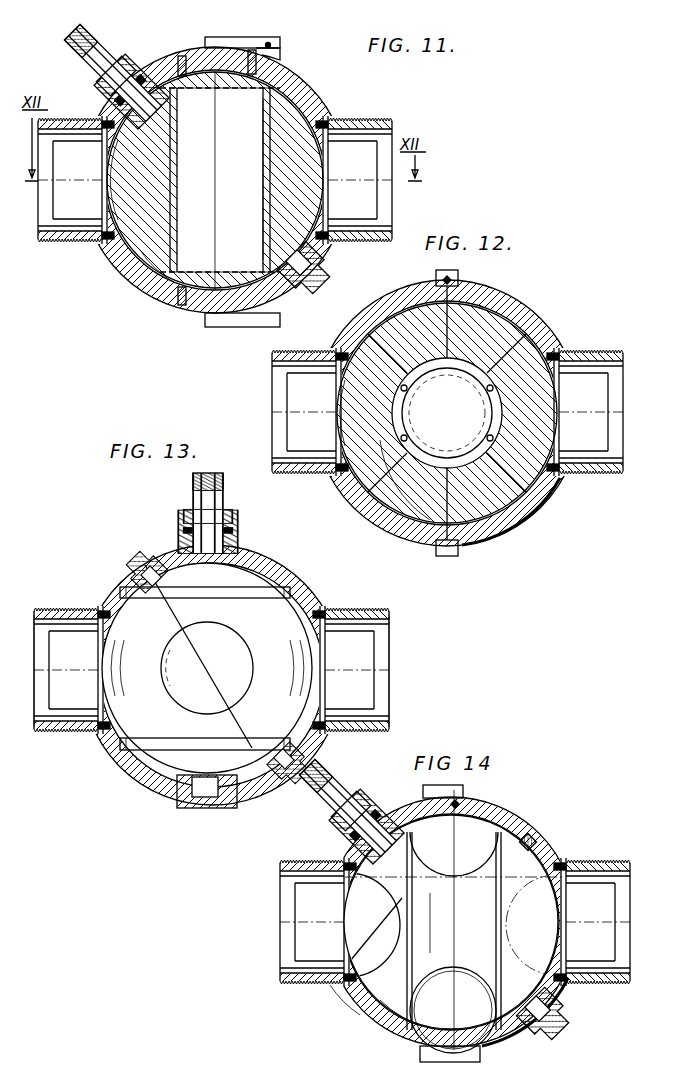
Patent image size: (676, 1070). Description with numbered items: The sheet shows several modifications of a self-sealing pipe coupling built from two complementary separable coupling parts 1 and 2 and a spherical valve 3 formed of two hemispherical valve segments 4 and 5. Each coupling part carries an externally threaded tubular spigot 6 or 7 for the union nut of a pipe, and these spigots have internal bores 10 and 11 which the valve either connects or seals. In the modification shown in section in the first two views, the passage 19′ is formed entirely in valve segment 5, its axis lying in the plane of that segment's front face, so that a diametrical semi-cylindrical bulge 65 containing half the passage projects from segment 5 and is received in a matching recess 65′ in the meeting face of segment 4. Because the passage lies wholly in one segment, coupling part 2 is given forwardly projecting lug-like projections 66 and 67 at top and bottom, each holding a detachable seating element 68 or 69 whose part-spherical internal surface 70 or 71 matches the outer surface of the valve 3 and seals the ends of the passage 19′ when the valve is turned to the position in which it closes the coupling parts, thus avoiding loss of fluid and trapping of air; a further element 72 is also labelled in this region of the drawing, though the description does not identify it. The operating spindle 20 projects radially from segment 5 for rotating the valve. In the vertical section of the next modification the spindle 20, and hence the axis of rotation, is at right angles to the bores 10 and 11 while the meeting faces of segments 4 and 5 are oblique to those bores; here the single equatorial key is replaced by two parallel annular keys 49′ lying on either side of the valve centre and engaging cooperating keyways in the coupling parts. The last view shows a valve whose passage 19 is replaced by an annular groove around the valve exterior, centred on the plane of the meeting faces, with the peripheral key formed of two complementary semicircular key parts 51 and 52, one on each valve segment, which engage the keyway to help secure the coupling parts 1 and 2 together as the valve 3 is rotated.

In FIG. 11, the coupling part 1 is at (327, 108).
In FIG. 12, the coupling part 1 is at (565, 348).
In FIG. 13, the coupling part 1 is at (118, 582).
In FIG. 14, the coupling part 1 is at (568, 858).
In FIG. 11, the coupling part 2 is at (108, 258).
In FIG. 12, the coupling part 2 is at (360, 312).
In FIG. 13, the coupling part 2 is at (298, 585).
In FIG. 14, the coupling part 2 is at (382, 1028).
In FIG. 11, the spherical valve 3 is at (150, 262).
In FIG. 12, the spherical valve 3 is at (405, 480).
In FIG. 11, the valve segment 4 is at (298, 190).
In FIG. 12, the valve segment 4 is at (535, 410).
In FIG. 13, the valve segment 4 is at (138, 672).
In FIG. 14, the valve segment 4 is at (507, 947).
In FIG. 11, the valve segment 5 is at (150, 194).
In FIG. 12, the valve segment 5 is at (356, 432).
In FIG. 13, the valve segment 5 is at (295, 672).
In FIG. 14, the valve segment 5 is at (328, 985).
In FIG. 13, the tubular spigot 6 is at (46, 608).
In FIG. 13, the tubular spigot 7 is at (350, 608).
In FIG. 13, the bore 10 is at (63, 703).
In FIG. 13, the bore 11 is at (340, 625).
In FIG. 13, the cylindrical passage 19 is at (240, 637).
In FIG. 11, the passage 19′ is at (170, 176).
In FIG. 12, the passage 19′ is at (408, 447).
In FIG. 11, the operating spindle 20 is at (121, 93).
In FIG. 13, the operating spindle 20 is at (205, 528).
In FIG. 14, the operating spindle 20 is at (337, 795).
In FIG. 13, the parallel keys 49′ is at (218, 592).
In FIG. 14, the key part 51 is at (503, 875).
In FIG. 14, the key part 52 is at (382, 997).
In FIG. 11, the semi-cylindrical bulge 65 is at (268, 174).
In FIG. 12, the semi-cylindrical bulge 65 is at (486, 373).
In FIG. 12, the recess 65′ is at (490, 460).
In FIG. 11, the lug-like projection 66 is at (270, 45).
In FIG. 11, the lug-like projection 67 is at (207, 308).
In FIG. 11, the seating element 68 is at (272, 75).
In FIG. 11, the seating element 69 is at (172, 300).
In FIG. 11, the part spherical internal surface 70 is at (215, 86).
In FIG. 11, the part spherical internal surface 71 is at (193, 288).
In FIG. 11, the pin 72 is at (256, 58).
In FIG. 12, the pin 72 is at (455, 282).